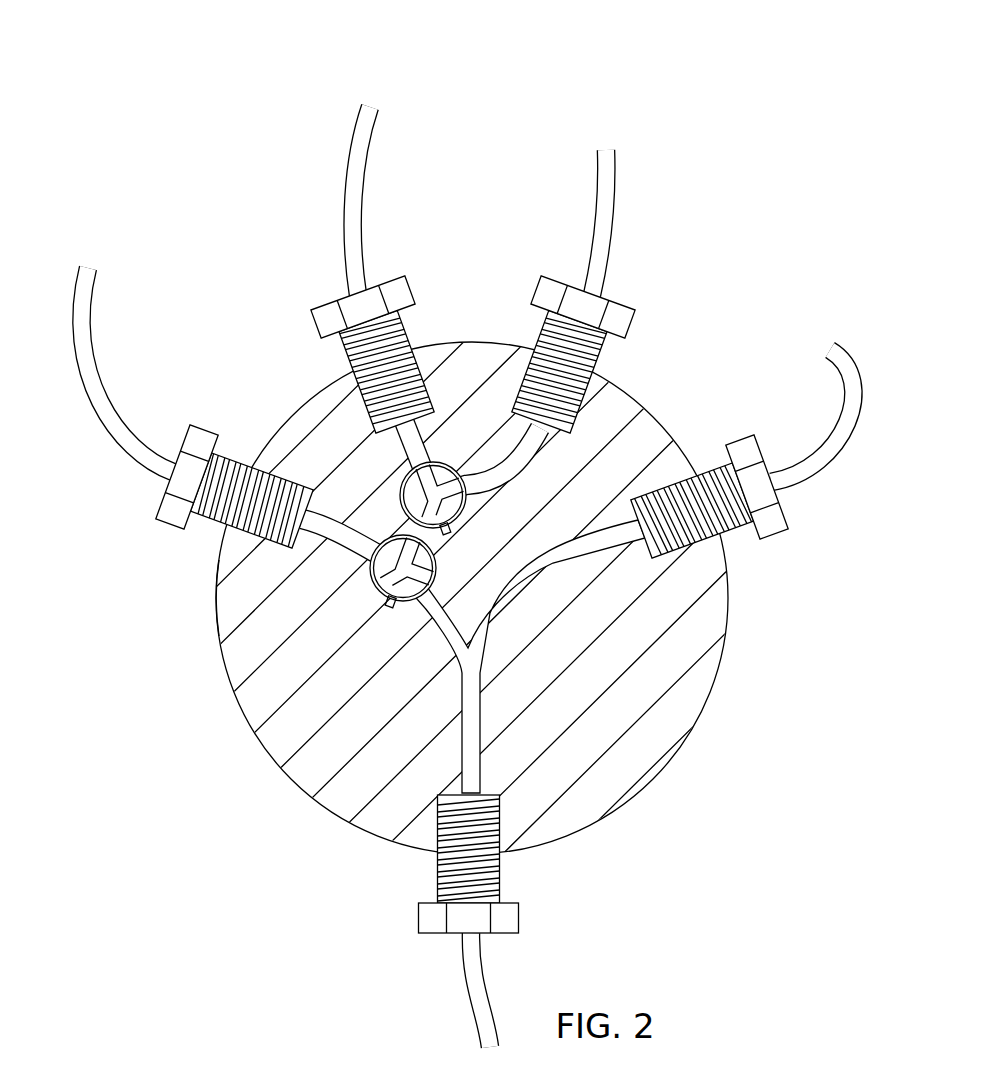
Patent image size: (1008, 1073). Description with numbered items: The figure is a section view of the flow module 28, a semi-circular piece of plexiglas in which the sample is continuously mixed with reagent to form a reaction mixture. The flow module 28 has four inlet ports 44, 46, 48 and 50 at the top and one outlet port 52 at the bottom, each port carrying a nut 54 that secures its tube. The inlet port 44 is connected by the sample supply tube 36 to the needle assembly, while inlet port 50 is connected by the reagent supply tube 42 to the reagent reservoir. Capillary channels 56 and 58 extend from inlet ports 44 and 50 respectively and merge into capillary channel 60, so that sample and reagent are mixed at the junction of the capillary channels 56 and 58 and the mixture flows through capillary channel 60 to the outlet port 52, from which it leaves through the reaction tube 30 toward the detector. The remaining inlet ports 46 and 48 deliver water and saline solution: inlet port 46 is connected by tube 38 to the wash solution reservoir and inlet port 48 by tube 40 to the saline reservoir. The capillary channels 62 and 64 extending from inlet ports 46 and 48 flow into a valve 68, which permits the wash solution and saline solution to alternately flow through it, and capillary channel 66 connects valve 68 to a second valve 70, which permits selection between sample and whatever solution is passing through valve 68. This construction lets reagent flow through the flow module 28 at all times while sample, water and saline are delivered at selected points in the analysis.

The flow module 28 is at (466, 110).
The reaction tube 30 is at (468, 1000).
The sample supply tube 36 is at (80, 318).
The supply tube 38 is at (355, 172).
The supply tube 40 is at (612, 213).
The reagent supply tube 42 is at (850, 402).
The inlet port 44 is at (222, 558).
The inlet port 46 is at (443, 345).
The inlet port 48 is at (575, 425).
The inlet port 50 is at (690, 570).
The outlet port 52 is at (505, 857).
The nut 54 is at (333, 320).
The capillary channel 56 is at (250, 642).
The capillary channel 58 is at (487, 688).
The capillary channel 60 is at (449, 688).
The capillary channel 62 is at (410, 492).
The capillary channel 64 is at (508, 452).
The capillary channel 66 is at (430, 537).
The valve 68 is at (397, 493).
The second valve 70 is at (377, 593).